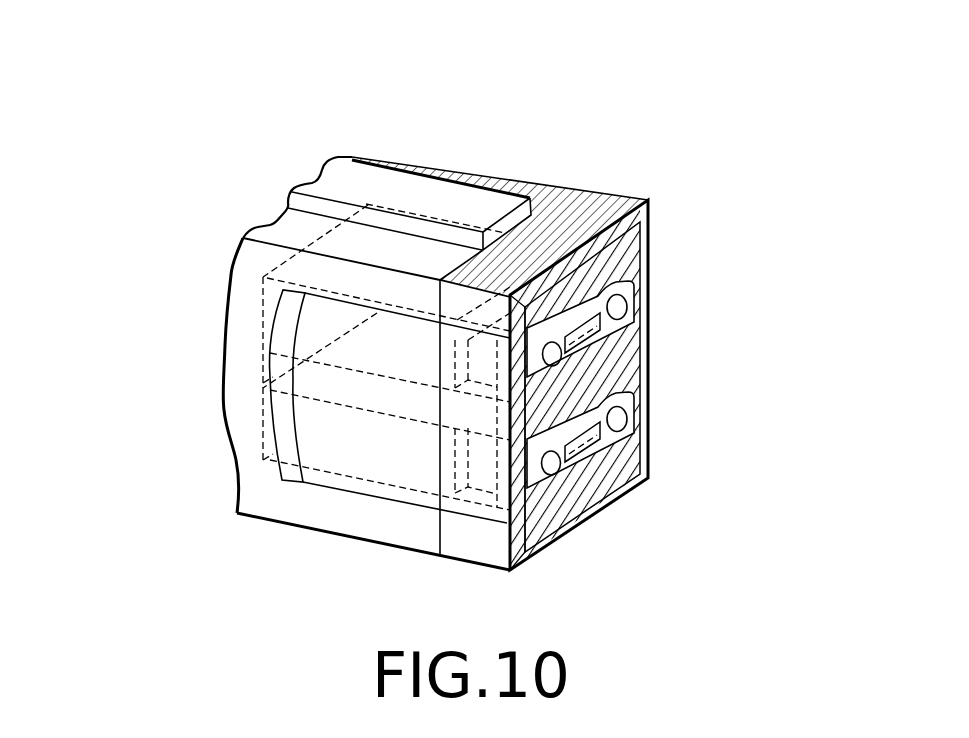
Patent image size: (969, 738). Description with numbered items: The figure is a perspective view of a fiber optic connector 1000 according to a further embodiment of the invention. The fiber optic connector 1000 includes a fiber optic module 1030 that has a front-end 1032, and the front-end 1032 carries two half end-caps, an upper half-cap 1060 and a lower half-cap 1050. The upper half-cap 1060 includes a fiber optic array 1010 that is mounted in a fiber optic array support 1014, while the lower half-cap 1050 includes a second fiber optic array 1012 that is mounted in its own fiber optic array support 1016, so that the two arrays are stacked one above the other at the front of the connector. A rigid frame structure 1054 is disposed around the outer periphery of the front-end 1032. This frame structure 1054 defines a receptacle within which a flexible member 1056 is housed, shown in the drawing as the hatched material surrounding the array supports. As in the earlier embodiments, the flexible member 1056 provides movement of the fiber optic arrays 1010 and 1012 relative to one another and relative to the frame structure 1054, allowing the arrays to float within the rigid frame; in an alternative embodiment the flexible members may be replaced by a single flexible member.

The fiber optic connector 1000 is at (208, 115).
The fiber optic array 1010 is at (636, 280).
The fiber optic array 1012 is at (633, 394).
The fiber optic array support 1014 is at (648, 254).
The fiber optic array support 1016 is at (597, 457).
The fiber optic module 1030 is at (382, 287).
The front-end 1032 is at (583, 210).
The lower half-cap 1050 is at (612, 372).
The rigid frame structure 1054 is at (583, 518).
The flexible member 1056 is at (641, 307).
The upper half-cap 1060 is at (648, 456).